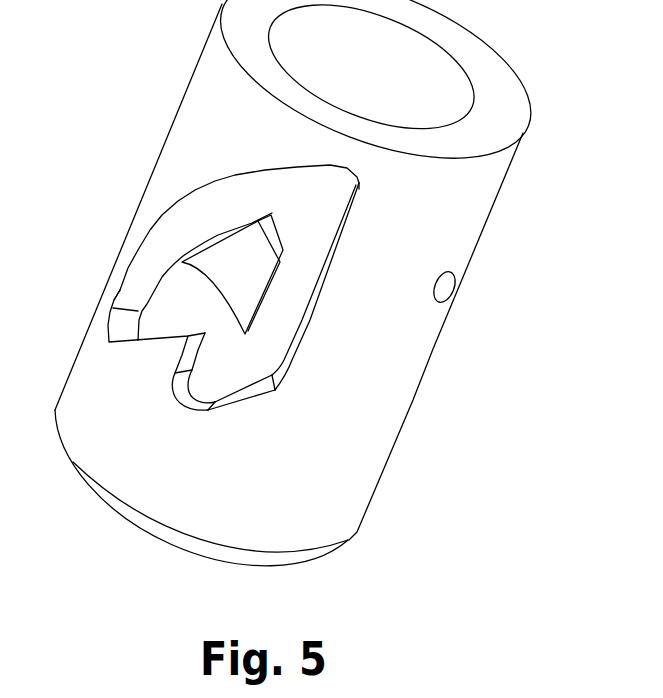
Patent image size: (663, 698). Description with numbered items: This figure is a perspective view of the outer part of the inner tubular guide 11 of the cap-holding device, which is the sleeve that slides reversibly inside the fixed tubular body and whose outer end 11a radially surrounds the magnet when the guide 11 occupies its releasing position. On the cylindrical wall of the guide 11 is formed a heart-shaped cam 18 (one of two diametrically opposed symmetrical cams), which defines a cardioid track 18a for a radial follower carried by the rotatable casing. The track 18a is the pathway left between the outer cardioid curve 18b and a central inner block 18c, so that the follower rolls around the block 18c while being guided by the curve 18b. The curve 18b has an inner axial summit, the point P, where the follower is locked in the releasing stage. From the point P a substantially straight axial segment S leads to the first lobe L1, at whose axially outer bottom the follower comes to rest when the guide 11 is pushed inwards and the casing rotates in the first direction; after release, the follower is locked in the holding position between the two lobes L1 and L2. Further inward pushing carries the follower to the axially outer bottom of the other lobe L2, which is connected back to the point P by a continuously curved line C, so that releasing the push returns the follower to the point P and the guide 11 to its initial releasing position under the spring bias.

The inner tubular guide 11 is at (430, 410).
The outer end of the guide 11a is at (348, 540).
The cam 18 is at (260, 416).
The cardioid track 18a is at (320, 224).
The outer cardioid curve 18b is at (320, 300).
The central inner block 18c is at (247, 278).
The continuously curved line C is at (163, 213).
The inner axial point P is at (359, 174).
The substantially straight axial segment S is at (306, 333).
The first lobe L1 is at (185, 414).
The second lobe L2 is at (115, 345).